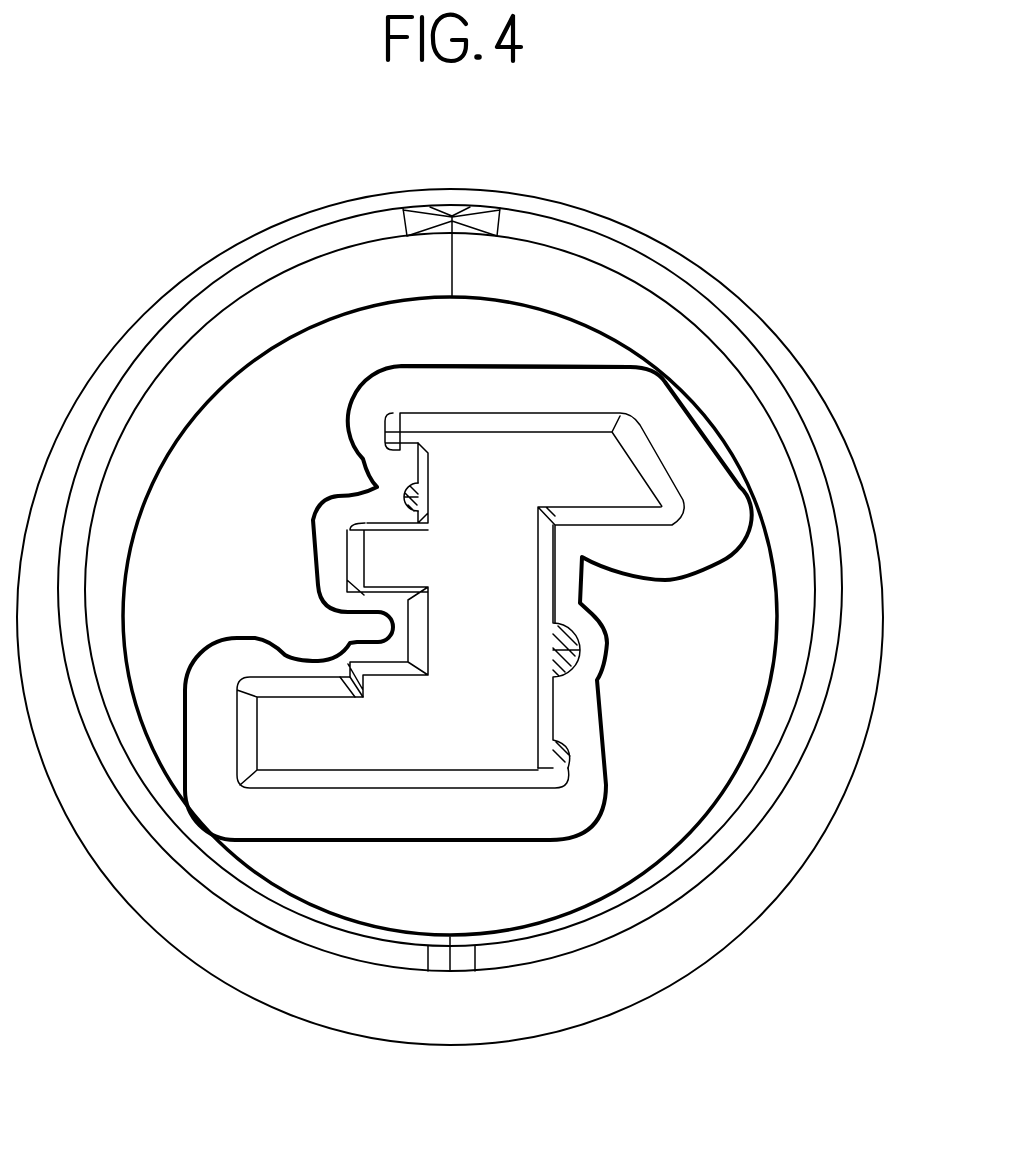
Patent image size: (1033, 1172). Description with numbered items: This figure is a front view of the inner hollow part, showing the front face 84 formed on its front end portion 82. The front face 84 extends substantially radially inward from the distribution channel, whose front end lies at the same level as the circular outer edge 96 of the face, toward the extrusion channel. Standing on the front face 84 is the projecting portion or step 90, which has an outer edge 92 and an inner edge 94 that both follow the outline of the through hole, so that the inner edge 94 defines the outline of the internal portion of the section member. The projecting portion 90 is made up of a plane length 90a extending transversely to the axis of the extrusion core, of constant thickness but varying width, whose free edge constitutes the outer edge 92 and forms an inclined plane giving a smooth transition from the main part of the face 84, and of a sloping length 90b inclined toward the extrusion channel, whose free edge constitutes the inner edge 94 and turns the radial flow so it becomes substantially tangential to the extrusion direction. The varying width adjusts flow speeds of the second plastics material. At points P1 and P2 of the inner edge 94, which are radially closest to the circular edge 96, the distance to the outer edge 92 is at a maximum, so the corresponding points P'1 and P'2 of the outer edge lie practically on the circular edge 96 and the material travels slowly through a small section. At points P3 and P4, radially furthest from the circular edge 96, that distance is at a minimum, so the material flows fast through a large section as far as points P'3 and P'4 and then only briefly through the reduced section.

The front end portion 82 is at (607, 197).
The front face 84 is at (553, 327).
The projecting portion 90 is at (459, 620).
The plane length 90a is at (443, 388).
The sloping length 90b is at (482, 425).
The outer edge 92 is at (391, 368).
The inner edge 94 is at (410, 765).
The circular outer edge 96 is at (185, 427).
The point P1 is at (611, 433).
The point P2 is at (258, 768).
The point P3 is at (428, 648).
The point P4 is at (538, 550).
The point P'1 is at (746, 329).
The point P'2 is at (130, 885).
The point P'3 is at (305, 610).
The point P'4 is at (648, 605).